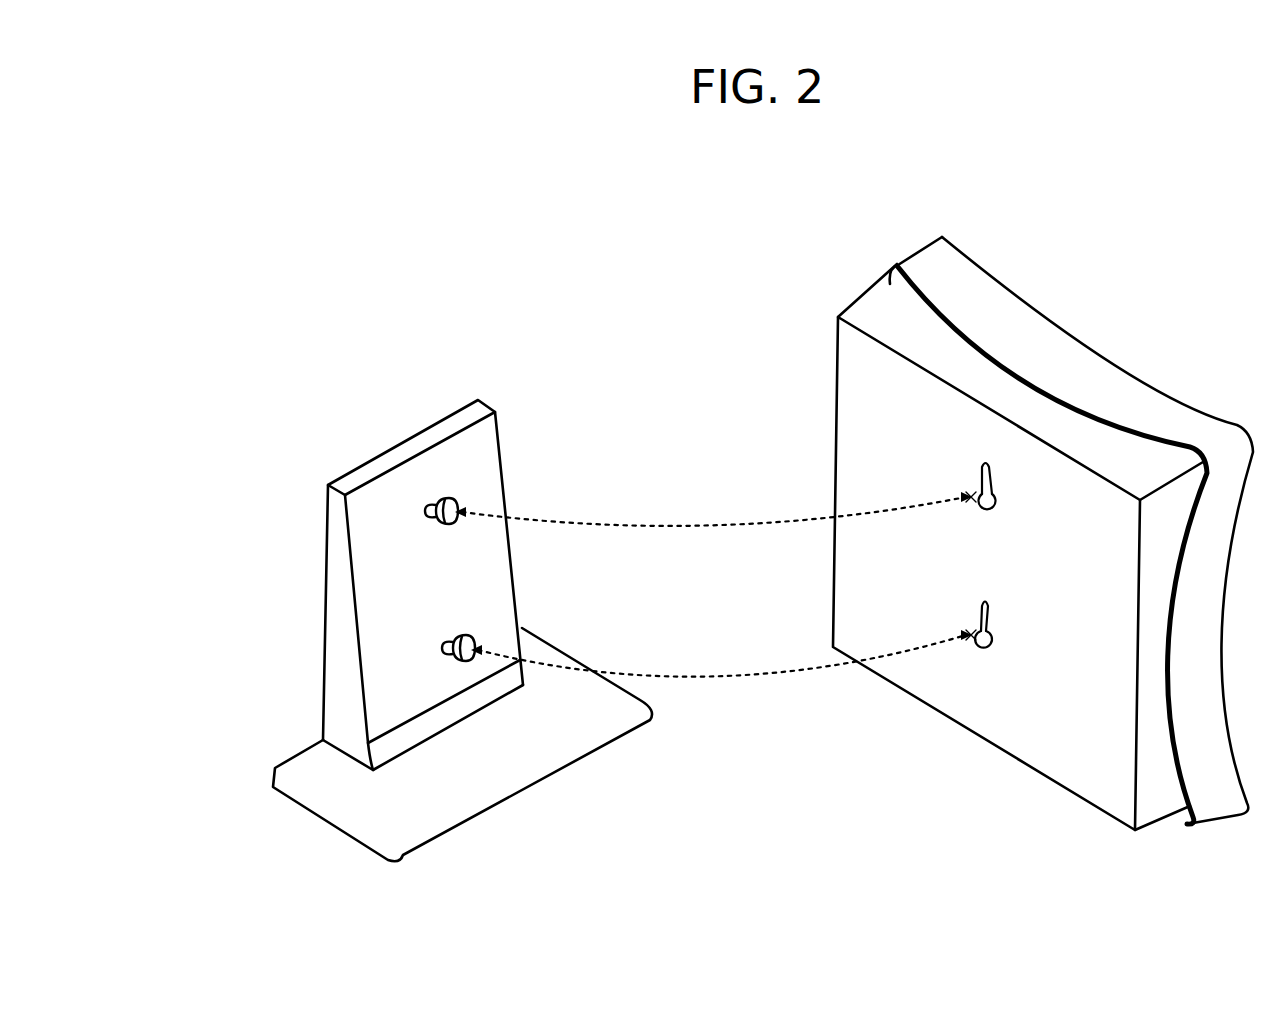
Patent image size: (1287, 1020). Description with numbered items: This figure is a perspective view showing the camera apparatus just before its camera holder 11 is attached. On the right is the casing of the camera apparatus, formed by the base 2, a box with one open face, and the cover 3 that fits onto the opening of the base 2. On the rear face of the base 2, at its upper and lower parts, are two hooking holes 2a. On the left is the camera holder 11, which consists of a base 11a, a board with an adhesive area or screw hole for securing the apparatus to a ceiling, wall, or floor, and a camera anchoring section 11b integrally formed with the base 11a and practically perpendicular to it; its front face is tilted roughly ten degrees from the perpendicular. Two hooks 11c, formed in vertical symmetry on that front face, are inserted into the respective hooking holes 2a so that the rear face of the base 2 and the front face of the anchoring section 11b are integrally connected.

The base 2 is at (1148, 773).
The hooking hole 2a is at (993, 477).
The cover 3 is at (1197, 653).
The camera holder 11 is at (312, 565).
The base 11a is at (312, 800).
The camera anchoring section 11b is at (388, 510).
The hook 11c is at (458, 507).